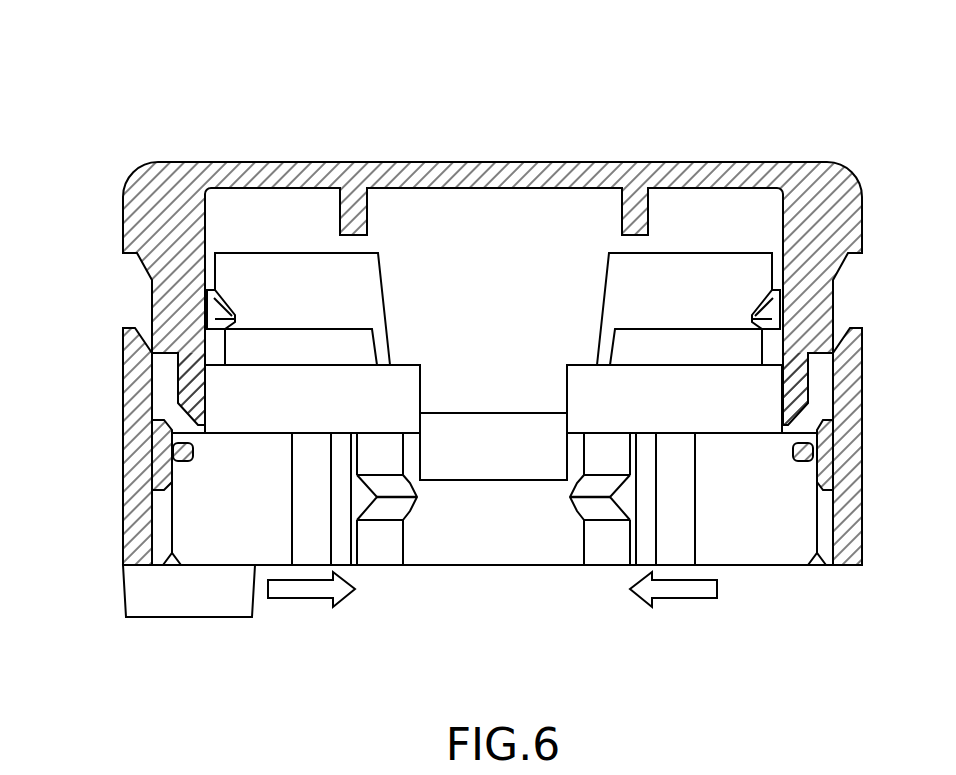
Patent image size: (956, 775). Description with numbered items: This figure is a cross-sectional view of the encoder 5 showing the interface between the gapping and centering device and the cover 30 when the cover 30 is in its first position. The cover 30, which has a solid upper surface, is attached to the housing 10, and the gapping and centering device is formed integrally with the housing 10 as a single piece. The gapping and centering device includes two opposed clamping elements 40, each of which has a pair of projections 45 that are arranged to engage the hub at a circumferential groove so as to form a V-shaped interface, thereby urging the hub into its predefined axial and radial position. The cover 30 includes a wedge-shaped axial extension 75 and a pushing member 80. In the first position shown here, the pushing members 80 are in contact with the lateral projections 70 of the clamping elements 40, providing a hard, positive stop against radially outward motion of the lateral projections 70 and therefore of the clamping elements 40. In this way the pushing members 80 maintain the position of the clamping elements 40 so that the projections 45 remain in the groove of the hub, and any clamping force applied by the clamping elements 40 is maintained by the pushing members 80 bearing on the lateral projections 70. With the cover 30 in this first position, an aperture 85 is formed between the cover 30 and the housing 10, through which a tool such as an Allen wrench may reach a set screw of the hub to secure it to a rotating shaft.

The encoder 5 is at (262, 140).
The housing 10 is at (138, 530).
The cover 30 is at (632, 172).
The clamping element 40 is at (381, 530).
The projection 45 is at (393, 497).
The lateral projection 70 is at (183, 457).
The wedge-shaped axial extension 75 is at (190, 383).
The pushing member 80 is at (155, 440).
The aperture 85 is at (507, 487).